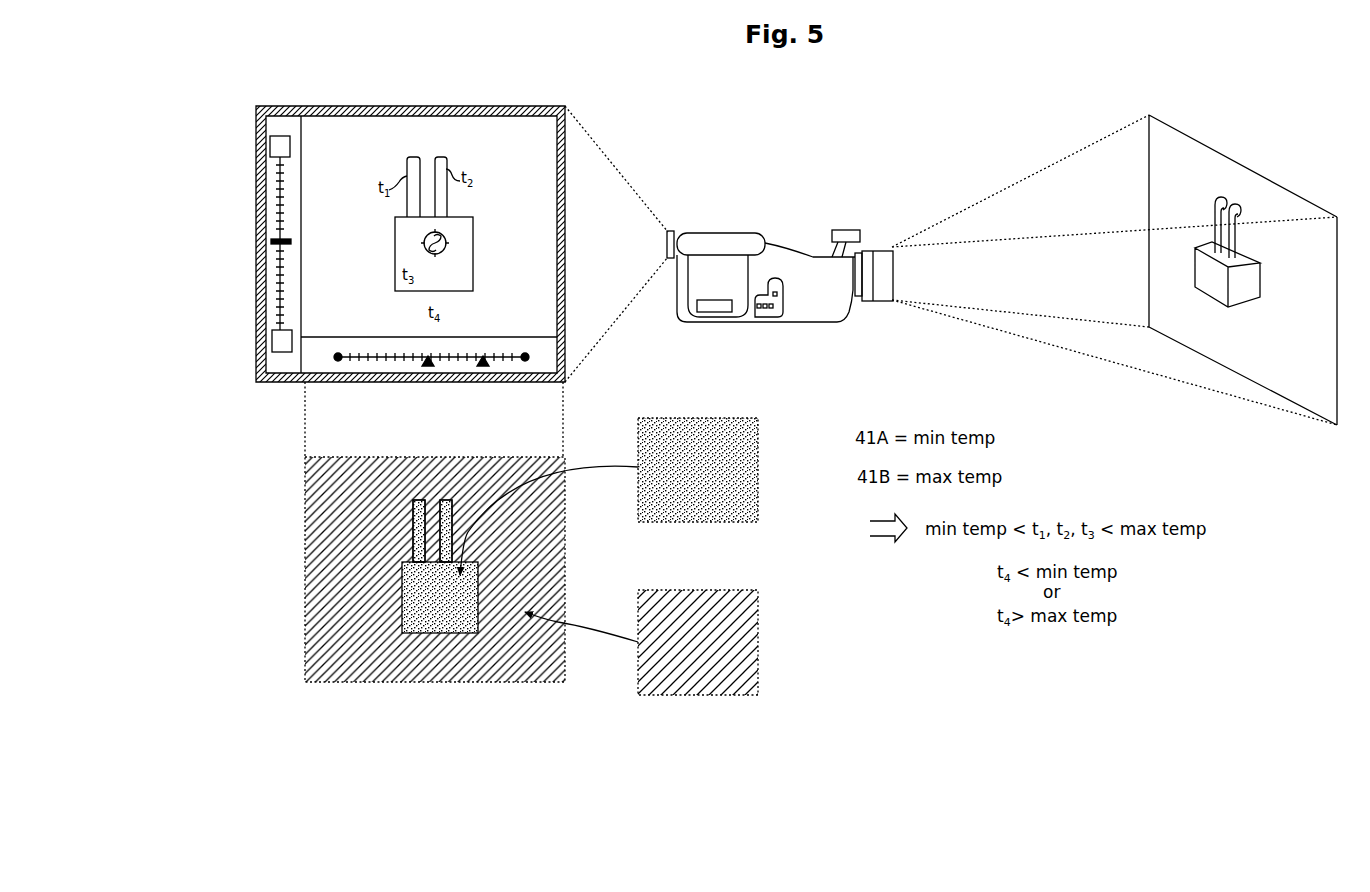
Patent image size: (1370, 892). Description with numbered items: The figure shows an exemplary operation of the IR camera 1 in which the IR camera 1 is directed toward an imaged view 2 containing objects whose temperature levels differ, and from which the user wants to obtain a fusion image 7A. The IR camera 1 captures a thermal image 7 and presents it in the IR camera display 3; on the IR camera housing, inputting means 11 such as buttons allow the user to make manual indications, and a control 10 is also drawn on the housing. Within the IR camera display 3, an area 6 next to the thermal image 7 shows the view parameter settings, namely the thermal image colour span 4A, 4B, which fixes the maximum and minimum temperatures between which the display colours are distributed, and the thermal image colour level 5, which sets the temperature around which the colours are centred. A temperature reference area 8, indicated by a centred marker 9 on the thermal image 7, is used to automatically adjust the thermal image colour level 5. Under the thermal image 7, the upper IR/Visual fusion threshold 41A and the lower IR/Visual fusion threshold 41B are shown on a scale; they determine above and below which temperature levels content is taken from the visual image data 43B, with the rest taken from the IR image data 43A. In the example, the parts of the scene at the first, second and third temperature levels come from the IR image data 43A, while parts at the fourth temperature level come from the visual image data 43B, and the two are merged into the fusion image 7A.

The IR camera 1 is at (719, 235).
The imaged view 2 is at (1176, 133).
The IR camera display 3 is at (500, 104).
The thermal image colour span 4A is at (270, 143).
The thermal image colour span 4B is at (272, 340).
The thermal image colour level 5 is at (271, 242).
The area 6 is at (283, 127).
The thermal image 7 is at (429, 340).
The fusion image 7A is at (305, 514).
The temperature reference area 8 is at (450, 231).
The centred marker 9 is at (440, 252).
The camera control 10 is at (843, 226).
The inputting means 11 is at (765, 318).
The upper IR/Visual fusion threshold 41A is at (428, 367).
The lower IR/Visual fusion threshold 41B is at (483, 367).
The IR image data 43A is at (755, 420).
The visual image data 43B is at (758, 590).